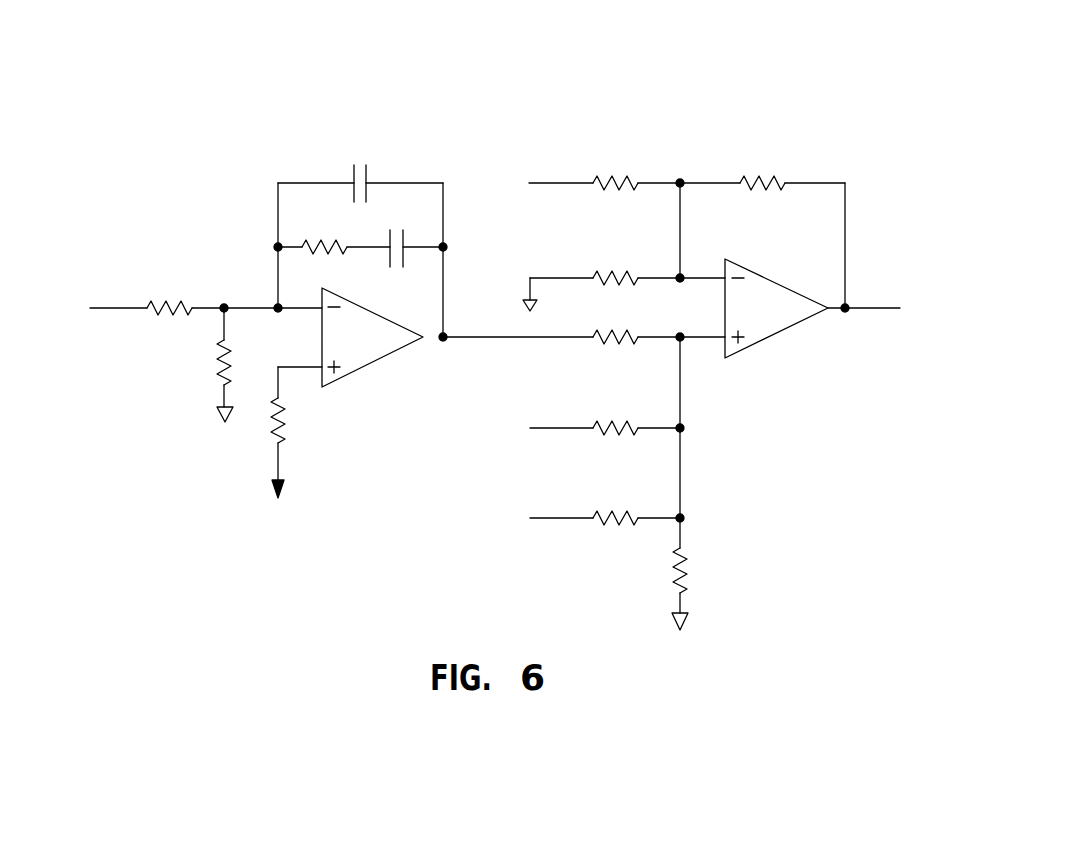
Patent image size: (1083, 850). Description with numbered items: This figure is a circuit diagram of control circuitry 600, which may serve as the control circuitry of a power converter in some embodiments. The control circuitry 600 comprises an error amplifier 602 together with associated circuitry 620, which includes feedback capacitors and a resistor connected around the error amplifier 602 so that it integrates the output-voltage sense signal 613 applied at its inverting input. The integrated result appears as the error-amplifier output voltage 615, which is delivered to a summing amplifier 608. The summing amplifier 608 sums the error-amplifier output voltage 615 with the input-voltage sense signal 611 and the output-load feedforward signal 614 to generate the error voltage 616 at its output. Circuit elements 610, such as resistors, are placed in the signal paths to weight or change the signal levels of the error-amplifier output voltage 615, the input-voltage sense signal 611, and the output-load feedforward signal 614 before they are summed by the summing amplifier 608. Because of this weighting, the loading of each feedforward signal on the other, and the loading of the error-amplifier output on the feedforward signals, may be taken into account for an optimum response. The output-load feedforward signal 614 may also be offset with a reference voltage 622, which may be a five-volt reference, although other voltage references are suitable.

The control circuitry 600 is at (735, 85).
The error amplifier 602 is at (372, 312).
The summing amplifier 608 is at (776, 285).
The circuit elements 610 is at (590, 546).
The input-voltage sense signal 611 is at (563, 181).
The output-voltage sense signal 613 is at (116, 306).
The output-load feedforward signal 614 is at (563, 425).
The error-amplifier output voltage 615 is at (497, 340).
The error voltage 616 is at (876, 306).
The associated circuitry 620 is at (261, 166).
The reference voltage 622 is at (563, 516).